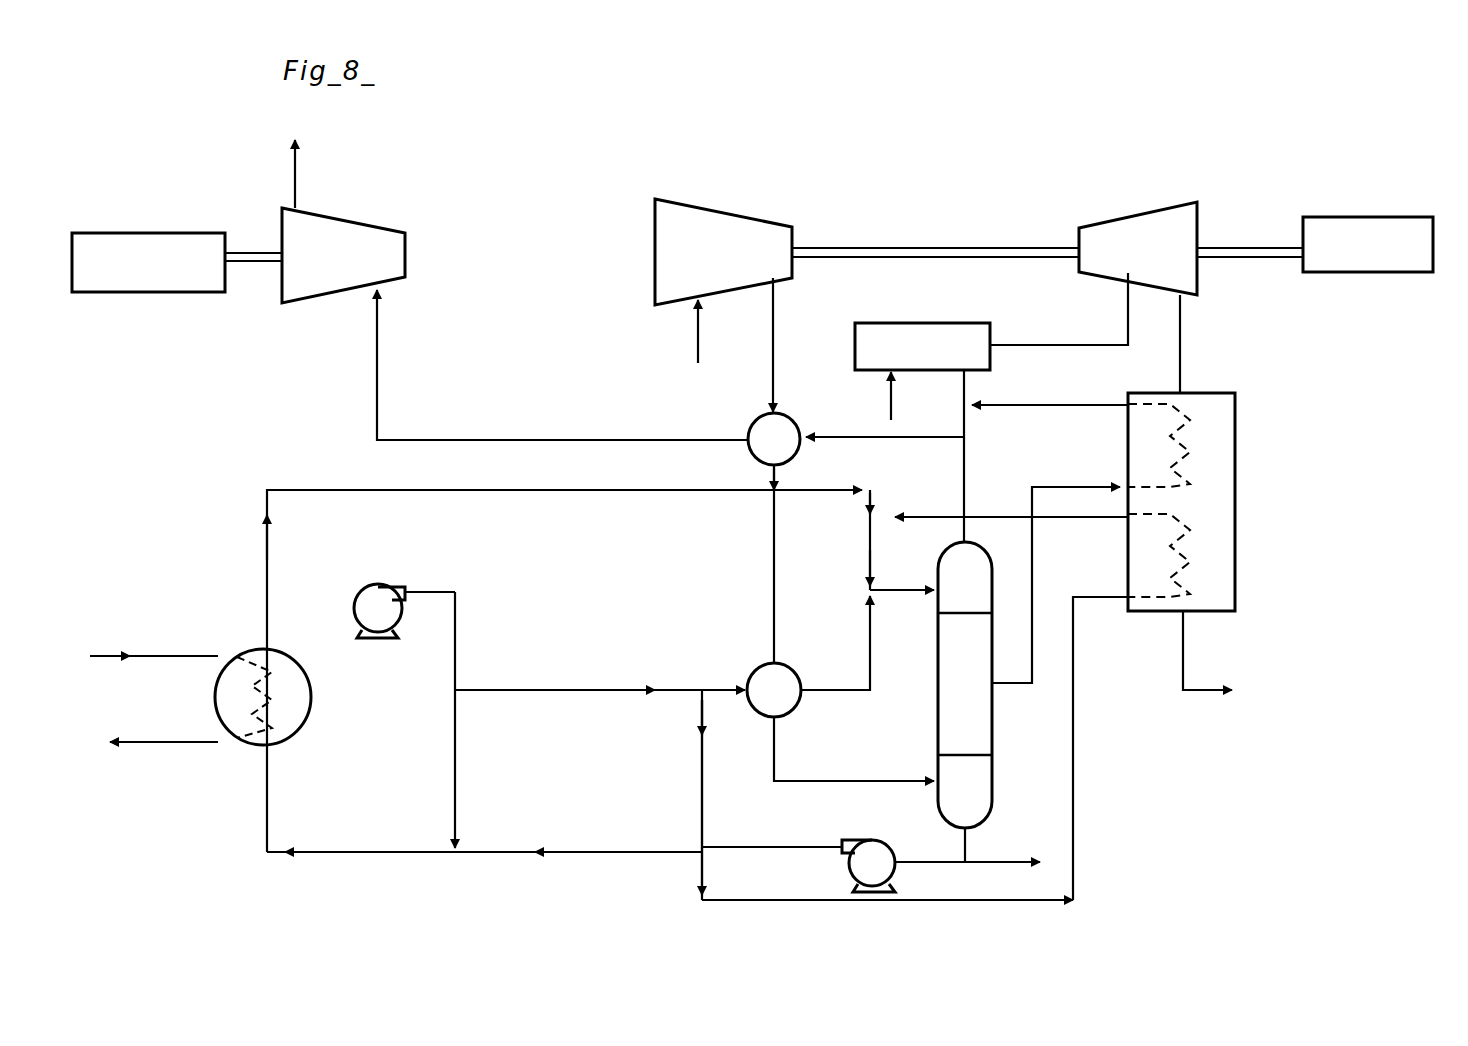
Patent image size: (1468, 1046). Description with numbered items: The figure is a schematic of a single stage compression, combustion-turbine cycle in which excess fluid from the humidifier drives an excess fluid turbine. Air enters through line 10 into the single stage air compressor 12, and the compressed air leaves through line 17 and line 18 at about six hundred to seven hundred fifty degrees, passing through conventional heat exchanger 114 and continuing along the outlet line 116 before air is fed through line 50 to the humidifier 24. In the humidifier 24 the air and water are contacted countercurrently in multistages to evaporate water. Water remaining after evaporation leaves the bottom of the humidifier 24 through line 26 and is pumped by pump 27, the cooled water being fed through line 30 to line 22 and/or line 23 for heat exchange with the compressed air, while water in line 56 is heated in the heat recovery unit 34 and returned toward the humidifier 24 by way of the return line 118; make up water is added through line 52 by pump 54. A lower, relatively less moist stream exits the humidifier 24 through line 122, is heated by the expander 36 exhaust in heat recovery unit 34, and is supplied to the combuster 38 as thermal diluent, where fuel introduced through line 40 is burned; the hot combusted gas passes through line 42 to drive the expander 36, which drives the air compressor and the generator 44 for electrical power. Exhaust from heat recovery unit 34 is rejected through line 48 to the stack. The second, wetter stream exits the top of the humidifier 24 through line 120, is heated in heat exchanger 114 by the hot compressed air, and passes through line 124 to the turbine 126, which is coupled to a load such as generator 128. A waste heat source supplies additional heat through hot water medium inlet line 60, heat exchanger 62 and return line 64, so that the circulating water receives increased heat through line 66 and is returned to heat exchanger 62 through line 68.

The air inlet line 10 is at (690, 328).
The air compressor 12 is at (714, 218).
The compressed air line 17 is at (773, 333).
The heat exchanger line 18 is at (760, 668).
The water line 22 is at (870, 621).
The water line 23 is at (645, 682).
The humidifier 24 is at (992, 716).
The bottoms water line 26 is at (968, 848).
The pump 27 is at (875, 840).
The cooled water line 30 is at (455, 708).
The heat recovery unit 34 is at (1236, 398).
The expander 36 is at (1105, 222).
The combuster 38 is at (970, 322).
The fuel line 40 is at (890, 402).
The combusted gas line 42 is at (1040, 344).
The generator 44 is at (1395, 216).
The exhaust line 48 is at (1184, 665).
The air feed line 50 is at (774, 752).
The make up water line 52 is at (413, 595).
The make up water pump 54 is at (392, 583).
The water line 56 is at (1073, 680).
The hot water medium inlet line 60 is at (200, 655).
The waste heat exchanger 62 is at (312, 686).
The return line 64 is at (205, 743).
The heated water line 66 is at (328, 489).
The water return line 68 is at (328, 851).
The heat exchanger 114 is at (748, 426).
The mixer outlet line 116 is at (773, 545).
The heat exchanger outlet line 118 is at (884, 588).
The wet stream line 120 is at (965, 455).
The less moist stream line 122 is at (1090, 486).
The heated wet fluid line 124 is at (378, 379).
The excess fluid turbine 126 is at (333, 302).
The generator 128 is at (160, 294).